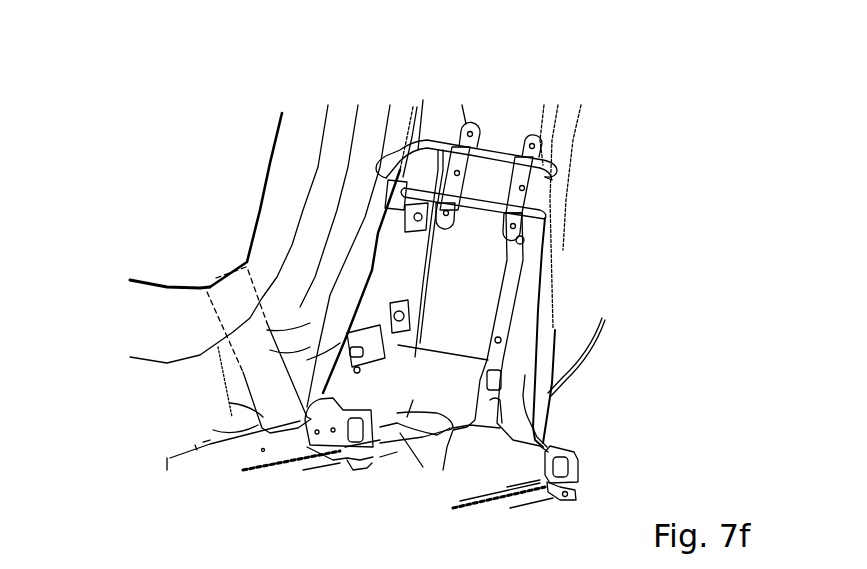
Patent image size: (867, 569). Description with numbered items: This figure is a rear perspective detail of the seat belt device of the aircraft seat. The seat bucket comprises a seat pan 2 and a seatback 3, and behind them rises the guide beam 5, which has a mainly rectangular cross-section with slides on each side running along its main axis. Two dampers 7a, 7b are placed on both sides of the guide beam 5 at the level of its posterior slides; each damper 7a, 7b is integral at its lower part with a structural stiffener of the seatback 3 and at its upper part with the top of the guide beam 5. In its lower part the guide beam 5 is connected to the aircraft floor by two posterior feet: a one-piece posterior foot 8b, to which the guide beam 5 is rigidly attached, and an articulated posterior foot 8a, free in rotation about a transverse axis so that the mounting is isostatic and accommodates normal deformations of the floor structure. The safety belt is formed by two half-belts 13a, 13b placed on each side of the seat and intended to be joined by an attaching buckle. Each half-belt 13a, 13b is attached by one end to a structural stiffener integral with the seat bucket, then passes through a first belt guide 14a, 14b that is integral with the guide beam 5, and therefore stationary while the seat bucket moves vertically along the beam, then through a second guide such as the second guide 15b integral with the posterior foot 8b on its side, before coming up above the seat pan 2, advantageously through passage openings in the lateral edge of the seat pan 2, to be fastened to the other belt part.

The seat pan 2 is at (175, 280).
The seatback 3 is at (291, 115).
The guide beam 5 is at (467, 323).
The damper 7a is at (565, 118).
The damper 7b is at (440, 113).
The articulated posterior foot 8a is at (507, 465).
The one-piece posterior foot 8b is at (293, 440).
The half-belt 13a is at (527, 322).
The half-belt 13b is at (335, 313).
The first belt guide 14a is at (542, 205).
The first belt guide 14b is at (377, 167).
The second guide 15b is at (263, 420).